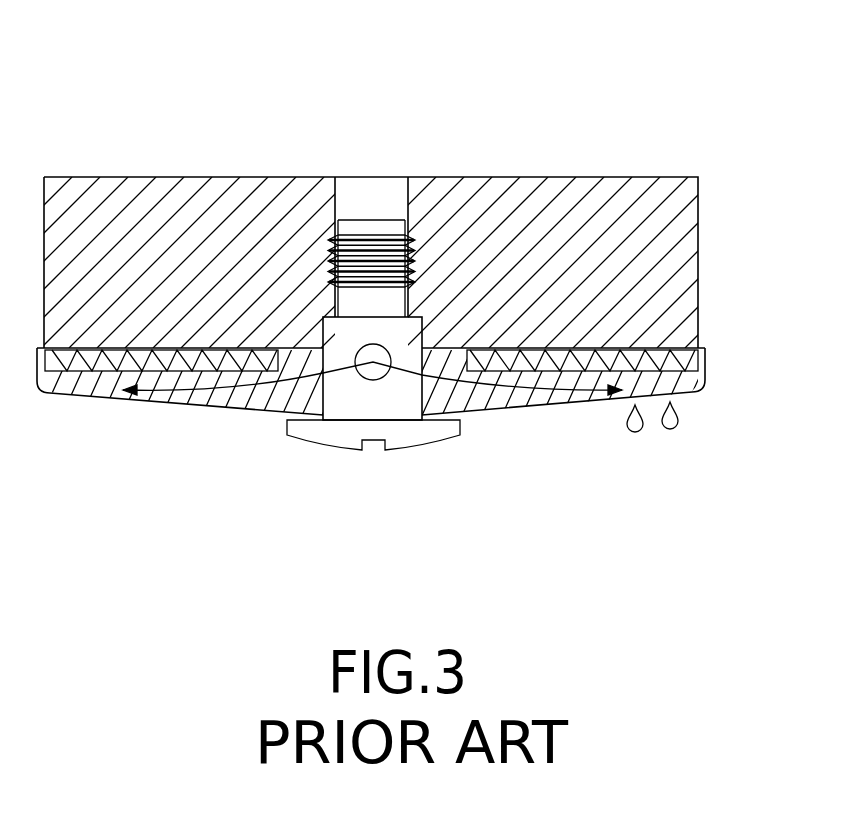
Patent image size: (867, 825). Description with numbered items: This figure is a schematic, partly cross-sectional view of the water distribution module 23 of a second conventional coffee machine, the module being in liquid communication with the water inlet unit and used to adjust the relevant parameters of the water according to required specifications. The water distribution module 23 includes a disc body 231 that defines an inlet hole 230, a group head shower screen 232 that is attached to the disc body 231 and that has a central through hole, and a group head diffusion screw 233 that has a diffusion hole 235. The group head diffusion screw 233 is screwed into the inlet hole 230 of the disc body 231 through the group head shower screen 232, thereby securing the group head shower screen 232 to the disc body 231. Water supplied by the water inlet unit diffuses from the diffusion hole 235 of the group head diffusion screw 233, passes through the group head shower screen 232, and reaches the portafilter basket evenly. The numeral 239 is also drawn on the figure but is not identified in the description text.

The water distribution module 23 is at (428, 301).
The disc body 231 is at (160, 188).
The inlet hole 230 is at (380, 180).
The group head diffusion screw 233 is at (357, 243).
The group head shower screen 232 is at (104, 391).
The diffusion hole 235 is at (372, 377).
The screw head 239 is at (421, 388).